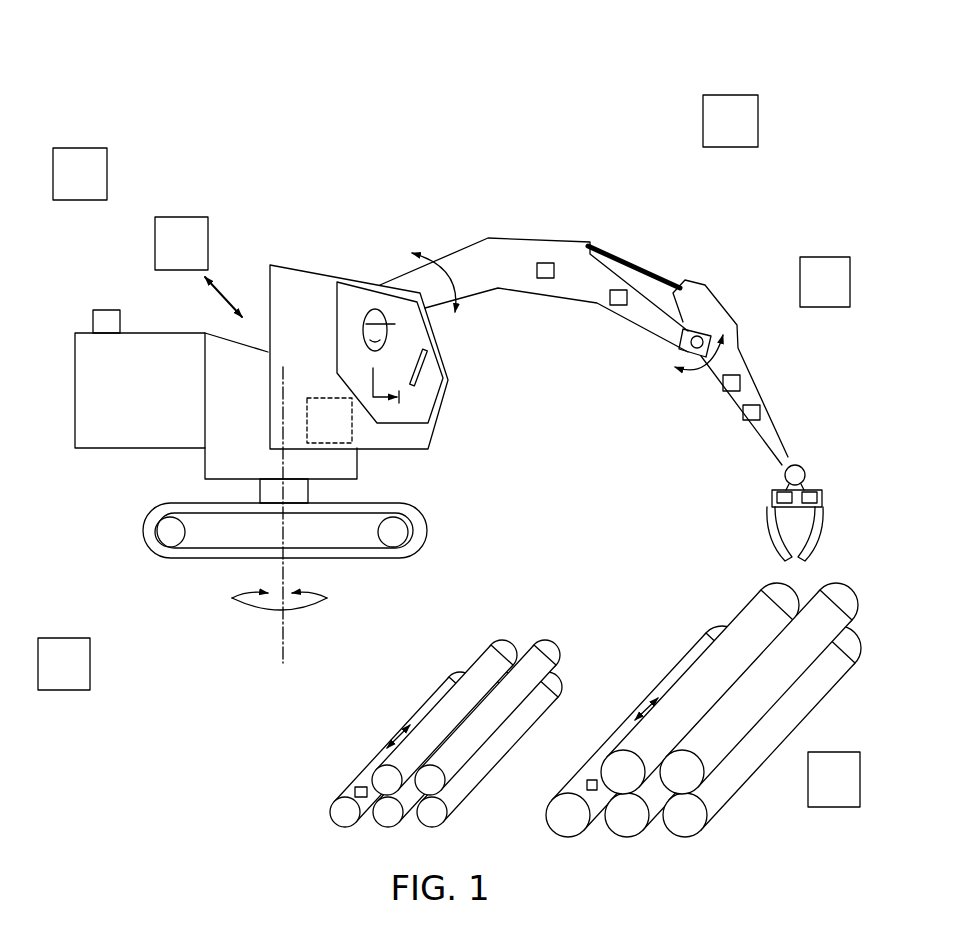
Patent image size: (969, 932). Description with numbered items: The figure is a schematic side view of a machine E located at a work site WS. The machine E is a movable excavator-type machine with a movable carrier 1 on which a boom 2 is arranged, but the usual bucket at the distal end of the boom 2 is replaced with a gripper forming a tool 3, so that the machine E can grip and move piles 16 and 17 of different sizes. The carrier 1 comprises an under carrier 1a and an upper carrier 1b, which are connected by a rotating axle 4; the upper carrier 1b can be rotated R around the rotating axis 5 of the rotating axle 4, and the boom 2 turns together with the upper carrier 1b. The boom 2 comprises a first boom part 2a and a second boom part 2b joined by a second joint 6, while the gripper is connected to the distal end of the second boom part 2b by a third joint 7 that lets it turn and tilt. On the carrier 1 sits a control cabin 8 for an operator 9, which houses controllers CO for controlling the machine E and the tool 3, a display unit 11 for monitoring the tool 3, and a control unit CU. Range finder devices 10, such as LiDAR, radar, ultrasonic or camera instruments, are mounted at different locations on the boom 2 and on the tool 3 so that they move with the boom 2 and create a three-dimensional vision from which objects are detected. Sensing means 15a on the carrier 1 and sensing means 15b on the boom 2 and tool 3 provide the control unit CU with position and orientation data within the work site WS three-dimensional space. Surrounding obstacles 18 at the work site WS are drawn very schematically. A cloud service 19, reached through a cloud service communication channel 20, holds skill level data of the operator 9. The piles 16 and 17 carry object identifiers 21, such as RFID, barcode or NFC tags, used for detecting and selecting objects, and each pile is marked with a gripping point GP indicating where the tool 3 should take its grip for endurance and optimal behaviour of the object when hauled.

The work site WS is at (148, 95).
The machine E is at (377, 130).
The carrier 1 is at (68, 333).
The under carrier 1a is at (163, 535).
The upper carrier 1b is at (127, 398).
The boom 2 is at (570, 162).
The first boom part 2a is at (500, 253).
The second boom part 2b is at (705, 310).
The tool 3 is at (827, 480).
The rotating axle 4 is at (298, 492).
The rotating axis 5 is at (282, 640).
The second joint 6 is at (688, 342).
The third joint 7 is at (775, 477).
The control cabin 8 is at (312, 290).
The operator 9 is at (370, 313).
The range finder device 10 is at (545, 262).
The display unit 11 is at (428, 360).
The sensing means 15a is at (107, 318).
The sensing means 15b is at (620, 293).
The pile 16 is at (370, 770).
The pile 17 is at (750, 623).
The surrounding obstacle 18 is at (66, 188).
The cloud service 19 is at (167, 257).
The cloud service communication channel 20 is at (223, 298).
The object identifier 21 is at (355, 790).
The rotation R is at (268, 598).
The controller CO is at (412, 398).
The control unit CU is at (337, 418).
The gripping point GP is at (392, 740).